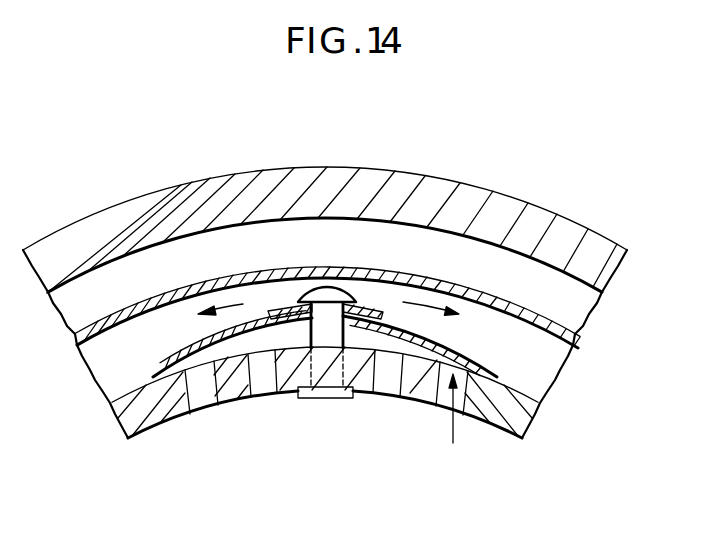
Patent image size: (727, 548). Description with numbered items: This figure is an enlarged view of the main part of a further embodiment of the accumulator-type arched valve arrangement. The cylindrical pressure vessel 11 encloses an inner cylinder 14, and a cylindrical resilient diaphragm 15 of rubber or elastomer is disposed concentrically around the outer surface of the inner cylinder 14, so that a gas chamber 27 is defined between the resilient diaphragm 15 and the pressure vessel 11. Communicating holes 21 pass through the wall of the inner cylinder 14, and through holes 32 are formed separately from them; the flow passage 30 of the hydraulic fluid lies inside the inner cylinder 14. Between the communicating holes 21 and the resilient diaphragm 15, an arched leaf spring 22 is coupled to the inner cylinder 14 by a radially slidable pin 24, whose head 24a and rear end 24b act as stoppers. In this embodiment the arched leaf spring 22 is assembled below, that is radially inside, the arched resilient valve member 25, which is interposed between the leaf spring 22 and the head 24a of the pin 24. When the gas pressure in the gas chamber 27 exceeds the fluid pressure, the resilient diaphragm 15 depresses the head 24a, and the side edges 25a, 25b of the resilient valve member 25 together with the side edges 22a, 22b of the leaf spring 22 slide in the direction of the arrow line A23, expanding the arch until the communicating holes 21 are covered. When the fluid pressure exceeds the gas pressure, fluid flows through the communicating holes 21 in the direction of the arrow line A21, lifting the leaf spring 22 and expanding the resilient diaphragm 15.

The cylindrical pressure vessel 11 is at (522, 198).
The inner cylinder 14 is at (534, 421).
The resilient diaphragm 15 is at (563, 325).
The communicating holes 21 is at (200, 388).
The arched leaf spring 22 is at (331, 367).
The side edge of the leaf spring 22a is at (494, 378).
The side edge of the leaf spring 22b is at (153, 374).
The pin 24 is at (341, 294).
The head of the pin 24a is at (352, 291).
The rear end of the pin 24b is at (342, 398).
The resilient valve member 25 is at (366, 227).
The side edge of the resilient valve member 25a is at (268, 310).
The side edge of the resilient valve member 25b is at (443, 300).
The gas chamber 27 is at (122, 275).
The flow passage 30 is at (356, 431).
The through holes 32 is at (292, 393).
The arrow line A21 is at (443, 402).
The arrow line A23 is at (218, 303).